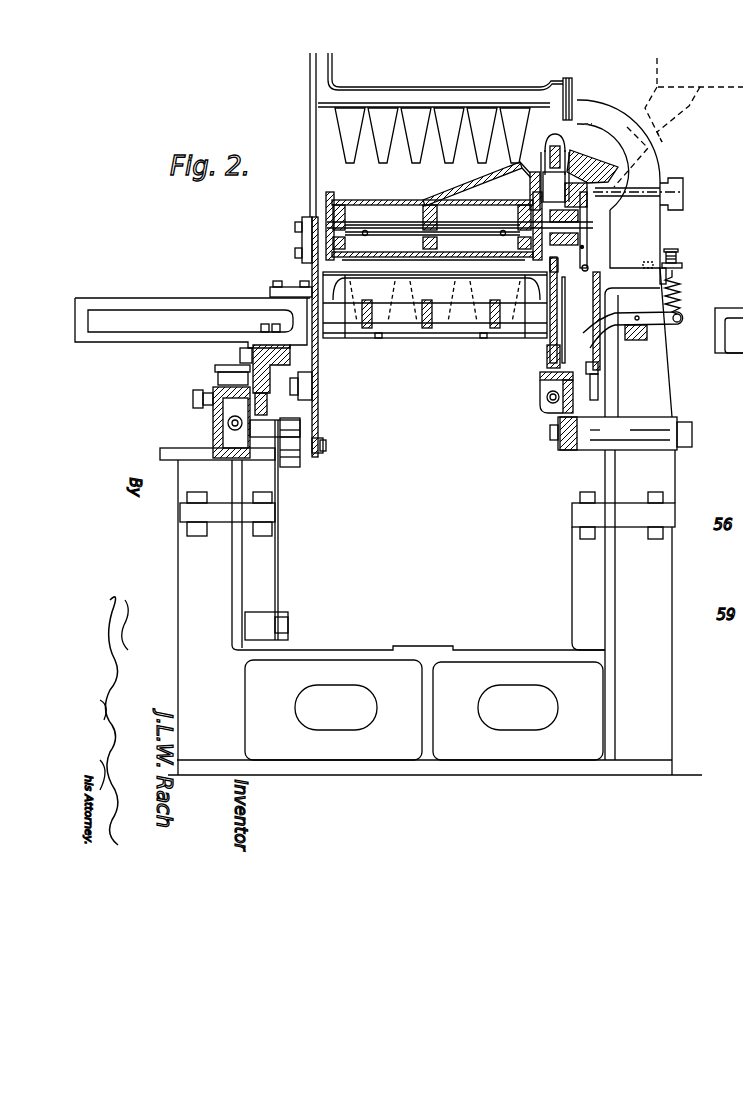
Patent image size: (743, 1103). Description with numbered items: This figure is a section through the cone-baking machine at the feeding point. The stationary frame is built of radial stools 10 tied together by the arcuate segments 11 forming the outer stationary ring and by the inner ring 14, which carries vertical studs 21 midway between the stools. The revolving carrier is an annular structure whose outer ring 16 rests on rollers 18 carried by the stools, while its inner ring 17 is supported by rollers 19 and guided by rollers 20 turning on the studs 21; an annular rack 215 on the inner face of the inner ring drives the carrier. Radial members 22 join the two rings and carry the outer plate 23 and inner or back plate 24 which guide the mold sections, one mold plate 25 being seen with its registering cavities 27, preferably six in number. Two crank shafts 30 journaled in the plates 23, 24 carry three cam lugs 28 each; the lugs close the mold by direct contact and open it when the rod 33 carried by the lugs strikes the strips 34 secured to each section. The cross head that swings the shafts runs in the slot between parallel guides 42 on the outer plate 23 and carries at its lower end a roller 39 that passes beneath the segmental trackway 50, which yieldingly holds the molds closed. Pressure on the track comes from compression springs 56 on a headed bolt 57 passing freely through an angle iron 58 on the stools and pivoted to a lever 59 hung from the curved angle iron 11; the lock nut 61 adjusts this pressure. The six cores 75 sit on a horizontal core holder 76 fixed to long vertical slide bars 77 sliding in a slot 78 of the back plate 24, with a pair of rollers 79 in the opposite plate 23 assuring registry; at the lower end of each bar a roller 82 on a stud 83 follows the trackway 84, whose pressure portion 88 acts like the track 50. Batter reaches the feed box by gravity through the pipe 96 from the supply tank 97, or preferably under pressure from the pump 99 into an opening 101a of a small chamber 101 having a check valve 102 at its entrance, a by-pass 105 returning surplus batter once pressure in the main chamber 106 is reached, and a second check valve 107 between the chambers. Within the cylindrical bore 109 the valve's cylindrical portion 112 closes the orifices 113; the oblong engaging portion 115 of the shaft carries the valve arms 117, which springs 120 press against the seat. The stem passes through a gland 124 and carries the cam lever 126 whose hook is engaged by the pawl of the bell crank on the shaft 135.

The radial stools 10 is at (394, 648).
The arcuate segments 11 is at (640, 335).
The ring 14 is at (213, 433).
The outer ring 16 is at (540, 380).
The inner ring 17 is at (271, 369).
The rollers 18 is at (563, 452).
The rollers 19 is at (267, 404).
The rollers 20 is at (218, 378).
The vertical studs 21 is at (215, 368).
The radial members 22 is at (362, 342).
The outer plates 23 is at (548, 355).
The inner plates 24 is at (317, 267).
The mold section 25 is at (460, 342).
The registering cavities 27 is at (492, 263).
The cam lugs 28 is at (428, 340).
The crank shafts 30 is at (473, 342).
The rod 33 is at (436, 300).
The strips 34 is at (379, 340).
The roller 39 is at (590, 385).
The parallel guides 42 is at (566, 310).
The trackway 50 is at (601, 360).
The springs 56 is at (679, 288).
The headed bolt 57 is at (676, 249).
The angle iron 58 is at (676, 266).
The lever 59 is at (655, 330).
The lock nut 61 is at (679, 258).
The cores 75 is at (436, 160).
The core holder 76 is at (456, 90).
The vertical slide bars 77 is at (310, 183).
The slot 78 is at (302, 243).
The rollers 79 is at (563, 268).
The roller 82 is at (300, 452).
The stud 83 is at (326, 446).
The trackway 84 is at (308, 421).
The pressure portion 88 is at (572, 86).
The pipe 96 is at (656, 142).
The batter supply tank 97 is at (700, 100).
The pump 99 is at (546, 150).
The small chamber 101 is at (552, 187).
The opening 101a is at (508, 168).
The check valve 102 is at (579, 189).
The by-pass 105 is at (600, 158).
The main chamber 106 is at (529, 196).
The second check valve 107 is at (526, 178).
The cylindrical bore 109 is at (433, 269).
The cylindrical portion 112 is at (414, 228).
The orifices 113 is at (400, 262).
The engaging portion 115 is at (460, 218).
The valve arms 117 is at (352, 214).
The springs 120 is at (356, 241).
The gland 124 is at (584, 247).
The lever 126 is at (583, 226).
The shaft 135 is at (612, 192).
The annular rack 215 is at (240, 350).